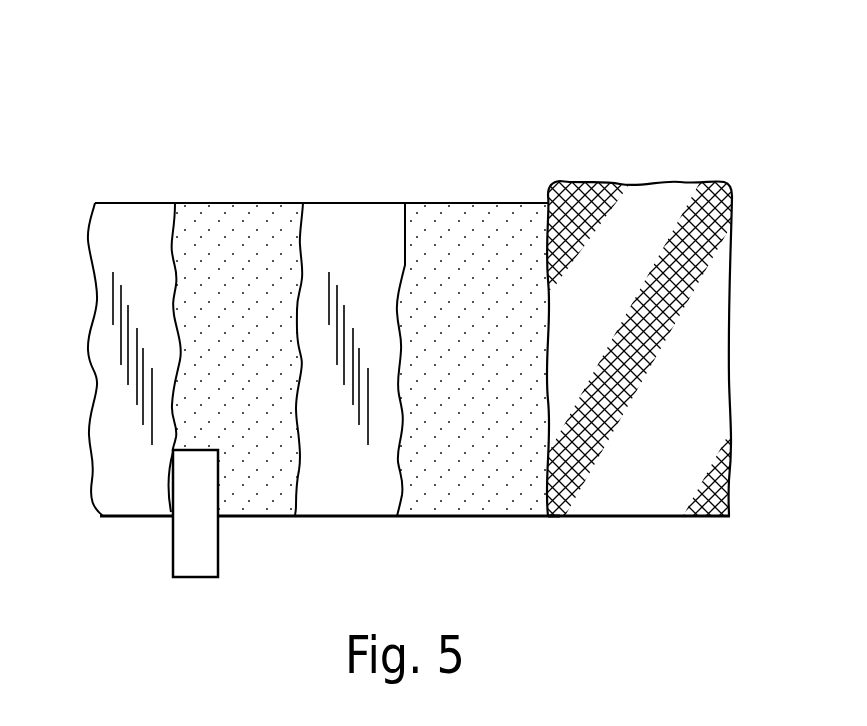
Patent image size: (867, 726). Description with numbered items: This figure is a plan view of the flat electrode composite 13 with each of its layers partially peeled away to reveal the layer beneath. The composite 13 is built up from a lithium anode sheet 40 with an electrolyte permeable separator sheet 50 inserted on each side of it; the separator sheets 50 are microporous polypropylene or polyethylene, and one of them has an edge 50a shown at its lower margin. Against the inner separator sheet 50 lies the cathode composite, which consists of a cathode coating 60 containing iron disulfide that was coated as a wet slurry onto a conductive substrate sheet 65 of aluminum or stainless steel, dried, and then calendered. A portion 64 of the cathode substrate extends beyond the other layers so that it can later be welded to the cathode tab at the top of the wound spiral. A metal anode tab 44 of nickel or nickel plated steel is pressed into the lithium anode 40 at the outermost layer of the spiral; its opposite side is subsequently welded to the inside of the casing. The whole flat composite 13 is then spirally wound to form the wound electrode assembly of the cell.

The flat electrode composite 13 is at (289, 93).
The lithium anode sheet 40 is at (240, 207).
The anode tab 44 is at (173, 543).
The separator sheet 50 is at (133, 207).
The bottom surface of facing layer 50a is at (345, 517).
The cathode coating 60 is at (478, 207).
The cathode substrate portion 64 is at (660, 183).
The conductive substrate sheet 65 is at (635, 517).